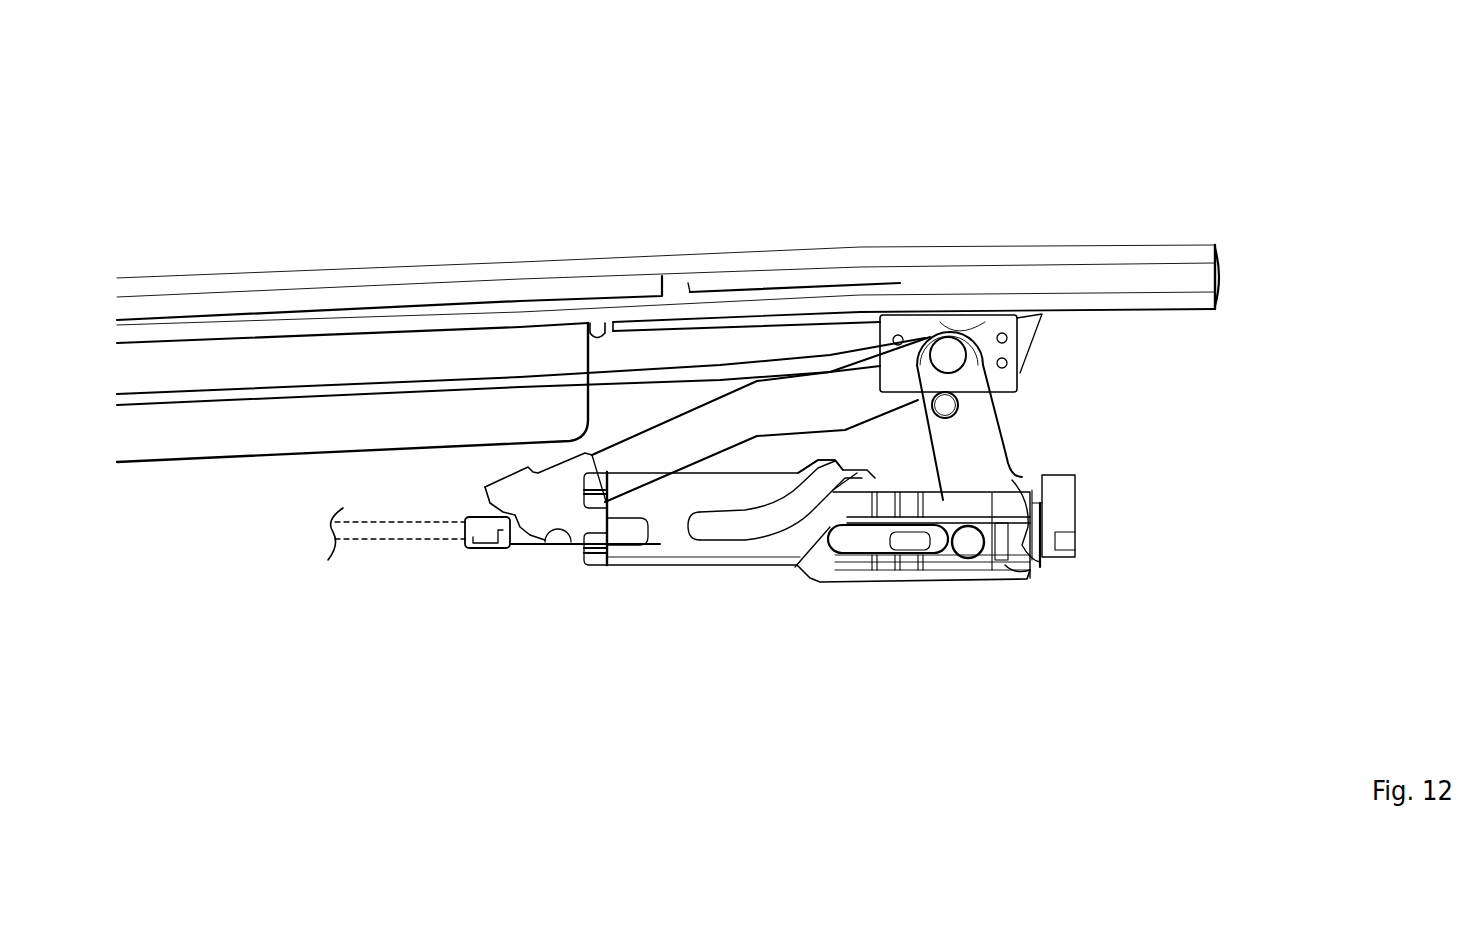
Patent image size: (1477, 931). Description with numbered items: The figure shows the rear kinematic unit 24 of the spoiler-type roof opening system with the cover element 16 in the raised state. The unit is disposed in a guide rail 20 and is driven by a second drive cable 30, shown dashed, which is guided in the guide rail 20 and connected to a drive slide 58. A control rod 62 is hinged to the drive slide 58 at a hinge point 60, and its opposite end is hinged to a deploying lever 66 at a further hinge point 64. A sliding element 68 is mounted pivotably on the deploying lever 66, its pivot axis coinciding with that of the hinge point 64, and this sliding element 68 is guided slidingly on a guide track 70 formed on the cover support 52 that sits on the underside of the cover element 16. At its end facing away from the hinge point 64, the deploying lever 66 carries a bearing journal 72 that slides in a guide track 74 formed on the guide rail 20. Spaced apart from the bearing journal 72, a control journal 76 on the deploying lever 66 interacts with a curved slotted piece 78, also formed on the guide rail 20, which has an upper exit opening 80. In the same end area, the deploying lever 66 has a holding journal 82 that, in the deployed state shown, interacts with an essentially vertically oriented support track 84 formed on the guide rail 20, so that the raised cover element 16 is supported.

The cover element 16 is at (338, 278).
The cover support 52 is at (610, 351).
The guide track 70 is at (640, 372).
The control rod 62 is at (770, 403).
The hinge point 64 is at (948, 340).
The sliding element 68 is at (990, 330).
The deploying lever 66 is at (970, 427).
The control journal 76 is at (950, 405).
The rear kinematic unit 24 is at (1005, 457).
The second drive cable 30 is at (392, 533).
The drive slide 58 is at (492, 533).
The hinge point 60 is at (562, 532).
The guide rail 20 is at (632, 563).
The slotted piece 78 is at (713, 528).
The upper exit opening 80 is at (857, 473).
The guide track 74 is at (857, 533).
The bearing journal 72 is at (968, 542).
The holding journal 82 is at (1037, 567).
The support track 84 is at (1013, 577).